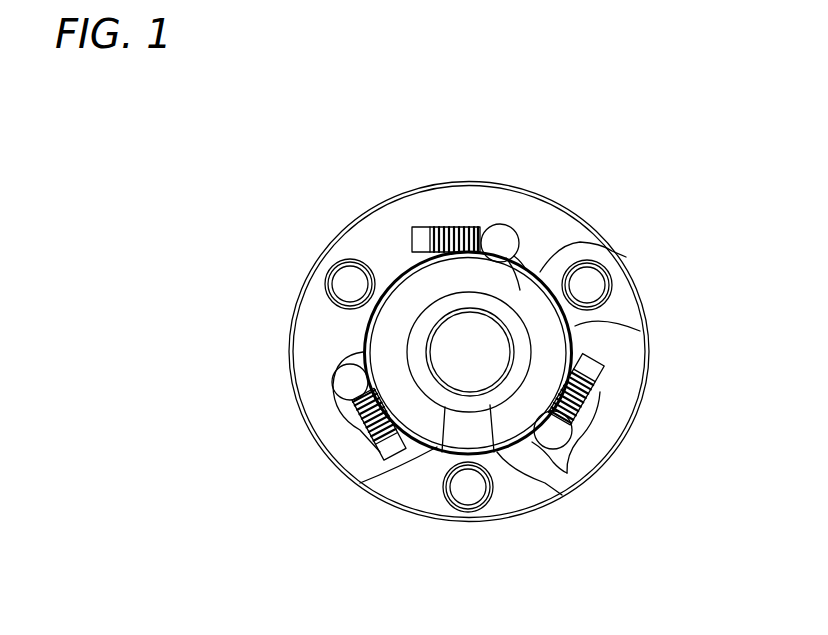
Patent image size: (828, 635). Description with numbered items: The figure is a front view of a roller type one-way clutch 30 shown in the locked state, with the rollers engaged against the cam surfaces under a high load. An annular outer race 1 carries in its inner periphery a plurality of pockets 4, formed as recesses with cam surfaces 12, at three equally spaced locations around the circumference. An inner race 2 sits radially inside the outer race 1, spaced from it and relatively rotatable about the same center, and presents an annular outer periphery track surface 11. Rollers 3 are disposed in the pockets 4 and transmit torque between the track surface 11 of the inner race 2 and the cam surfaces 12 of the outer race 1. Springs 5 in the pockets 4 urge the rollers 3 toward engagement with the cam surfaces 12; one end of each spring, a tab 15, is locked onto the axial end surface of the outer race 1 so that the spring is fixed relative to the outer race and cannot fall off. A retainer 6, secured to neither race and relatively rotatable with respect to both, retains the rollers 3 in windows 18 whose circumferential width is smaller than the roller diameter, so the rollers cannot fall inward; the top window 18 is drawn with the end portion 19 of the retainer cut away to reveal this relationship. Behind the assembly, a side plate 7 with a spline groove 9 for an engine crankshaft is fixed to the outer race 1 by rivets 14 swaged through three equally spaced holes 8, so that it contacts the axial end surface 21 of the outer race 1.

The outer race 1 is at (502, 240).
The inner race 2 is at (552, 340).
The rollers 3 is at (512, 222).
The pockets 4 is at (482, 224).
The springs 5 is at (600, 390).
The retainer 6 is at (612, 251).
The side plate 7 is at (553, 463).
The holes 8 is at (475, 497).
The spline groove 9 is at (407, 445).
The outer periphery track surface 11 is at (490, 262).
The cam surfaces 12 is at (567, 473).
The rivets 14 is at (463, 487).
The tab 15 is at (412, 227).
The windows 18 is at (506, 260).
The end portion 19 is at (392, 460).
The end surface 21 is at (362, 245).
The roller type one-way clutch 30 is at (586, 208).